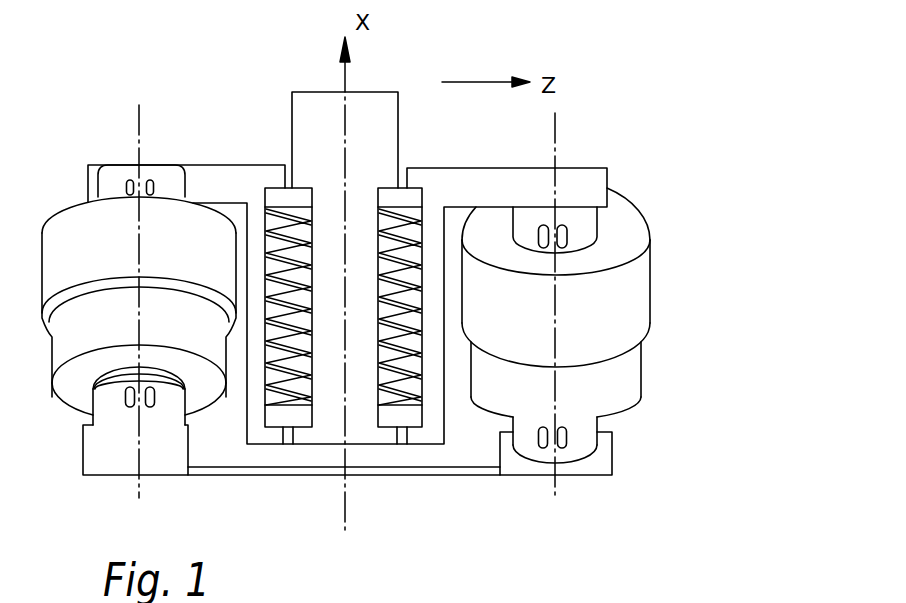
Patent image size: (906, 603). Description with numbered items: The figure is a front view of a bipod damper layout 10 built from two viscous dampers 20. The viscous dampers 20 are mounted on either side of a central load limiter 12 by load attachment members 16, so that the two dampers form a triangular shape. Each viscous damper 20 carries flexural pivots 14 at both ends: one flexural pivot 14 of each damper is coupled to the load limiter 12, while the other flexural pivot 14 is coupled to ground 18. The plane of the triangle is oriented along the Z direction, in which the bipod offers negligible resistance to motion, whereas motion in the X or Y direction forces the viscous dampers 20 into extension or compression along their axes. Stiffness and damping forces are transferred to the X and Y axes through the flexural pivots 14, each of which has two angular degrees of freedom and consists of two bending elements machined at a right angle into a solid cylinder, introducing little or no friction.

The bipod damper layout 10 is at (707, 136).
The load limiter 12 is at (377, 445).
The flexural pivots 14 is at (140, 164).
The load attachment members 16 is at (257, 163).
The ground 18 is at (292, 476).
The viscous dampers 20 is at (42, 256).